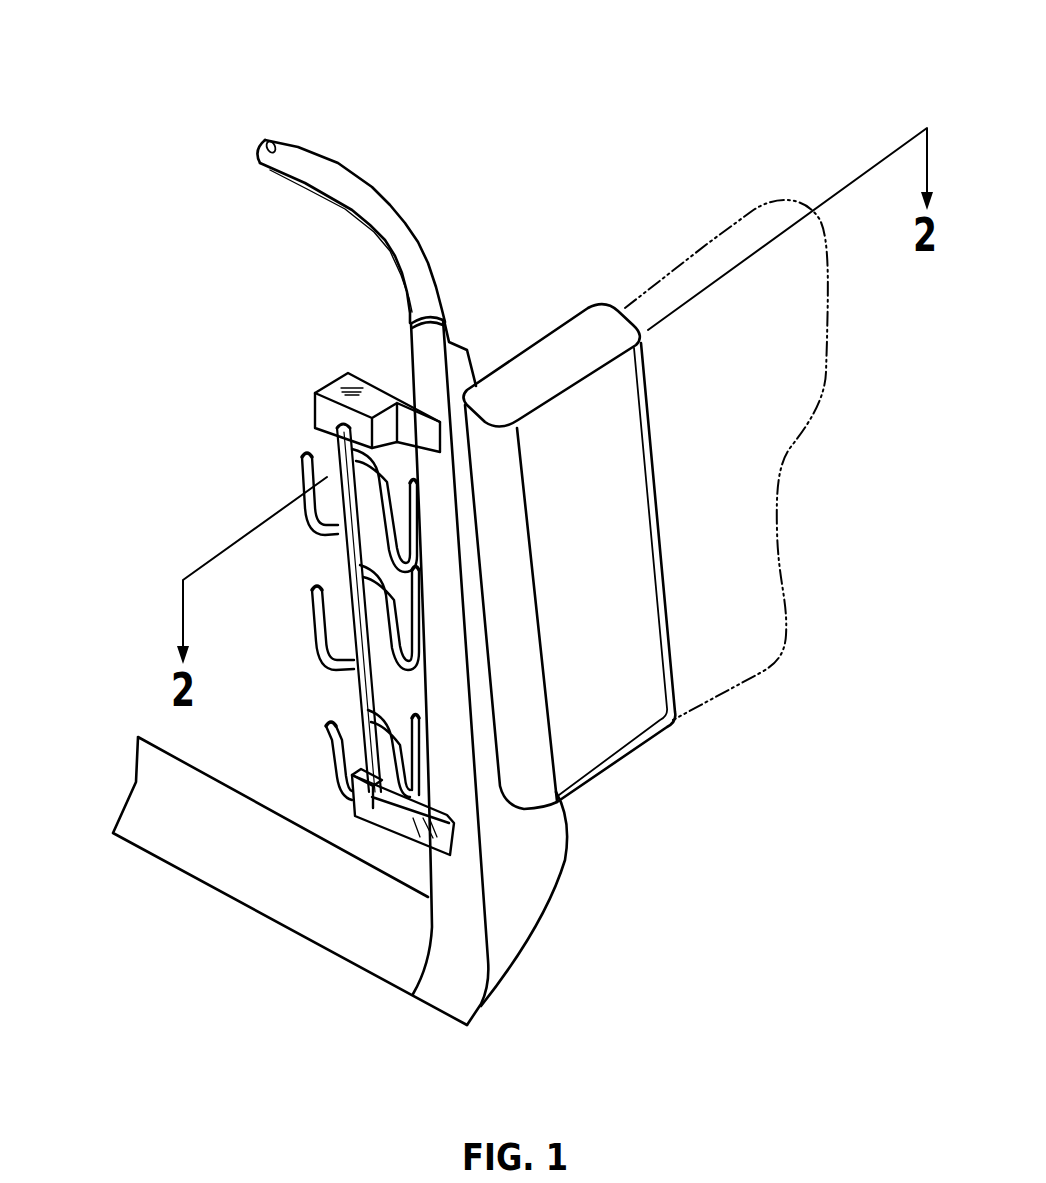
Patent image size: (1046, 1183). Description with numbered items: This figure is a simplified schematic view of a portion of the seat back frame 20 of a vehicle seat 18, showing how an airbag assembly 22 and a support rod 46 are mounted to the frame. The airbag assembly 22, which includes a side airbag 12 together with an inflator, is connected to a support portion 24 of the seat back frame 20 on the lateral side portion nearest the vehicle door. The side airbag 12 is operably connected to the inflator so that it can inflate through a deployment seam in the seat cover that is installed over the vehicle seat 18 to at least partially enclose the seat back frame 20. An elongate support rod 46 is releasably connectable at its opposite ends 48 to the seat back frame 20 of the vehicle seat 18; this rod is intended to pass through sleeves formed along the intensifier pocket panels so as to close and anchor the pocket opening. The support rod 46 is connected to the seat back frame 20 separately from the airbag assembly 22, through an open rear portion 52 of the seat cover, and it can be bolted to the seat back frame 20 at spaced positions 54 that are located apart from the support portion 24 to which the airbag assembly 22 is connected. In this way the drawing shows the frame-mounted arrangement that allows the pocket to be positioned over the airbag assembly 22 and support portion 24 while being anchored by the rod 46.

The side airbag 12 is at (708, 238).
The vehicle seat 18 is at (302, 98).
The seat back frame 20 is at (345, 182).
The airbag assembly 22 is at (582, 338).
The support portion 24 is at (460, 378).
The elongate support rod 46 is at (349, 565).
The opposite ends 48 is at (333, 430).
The open rear portion 52 is at (225, 725).
The spaced positions 54 is at (328, 408).